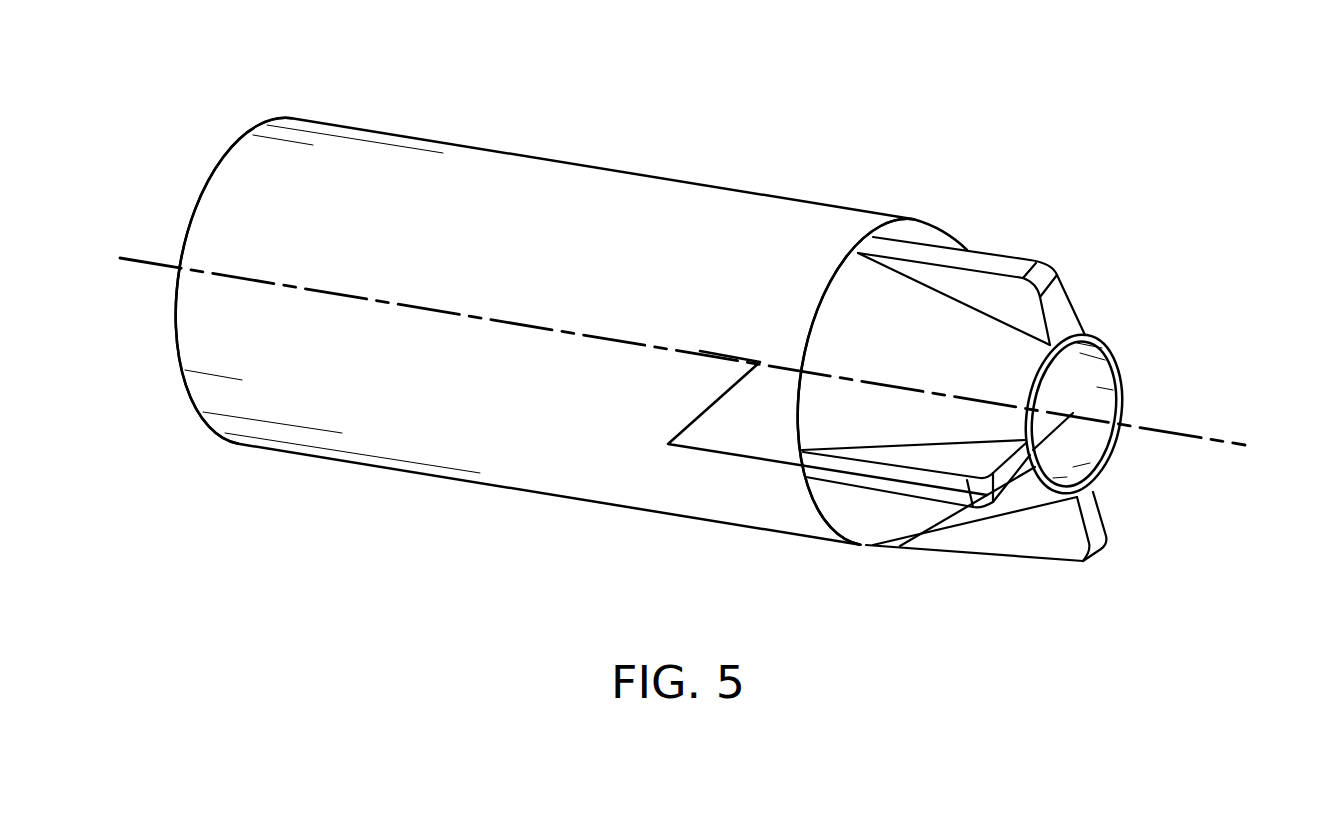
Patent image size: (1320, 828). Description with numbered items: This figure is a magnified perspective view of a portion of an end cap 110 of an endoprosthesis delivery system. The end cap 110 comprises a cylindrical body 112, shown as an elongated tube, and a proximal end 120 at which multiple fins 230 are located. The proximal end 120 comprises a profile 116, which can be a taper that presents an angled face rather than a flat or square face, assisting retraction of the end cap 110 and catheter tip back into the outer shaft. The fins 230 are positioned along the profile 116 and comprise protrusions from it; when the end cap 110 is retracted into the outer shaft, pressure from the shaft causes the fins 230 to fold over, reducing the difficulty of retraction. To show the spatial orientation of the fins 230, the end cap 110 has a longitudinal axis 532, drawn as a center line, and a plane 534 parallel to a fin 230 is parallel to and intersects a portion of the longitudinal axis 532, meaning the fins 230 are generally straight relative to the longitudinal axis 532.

The end cap 110 is at (710, 188).
The cylindrical body 112 is at (532, 158).
The profile 116 is at (863, 305).
The proximal end 120 is at (1100, 343).
The fins 230 is at (1007, 263).
The longitudinal axis 532 is at (1207, 431).
The plane 534 is at (731, 455).